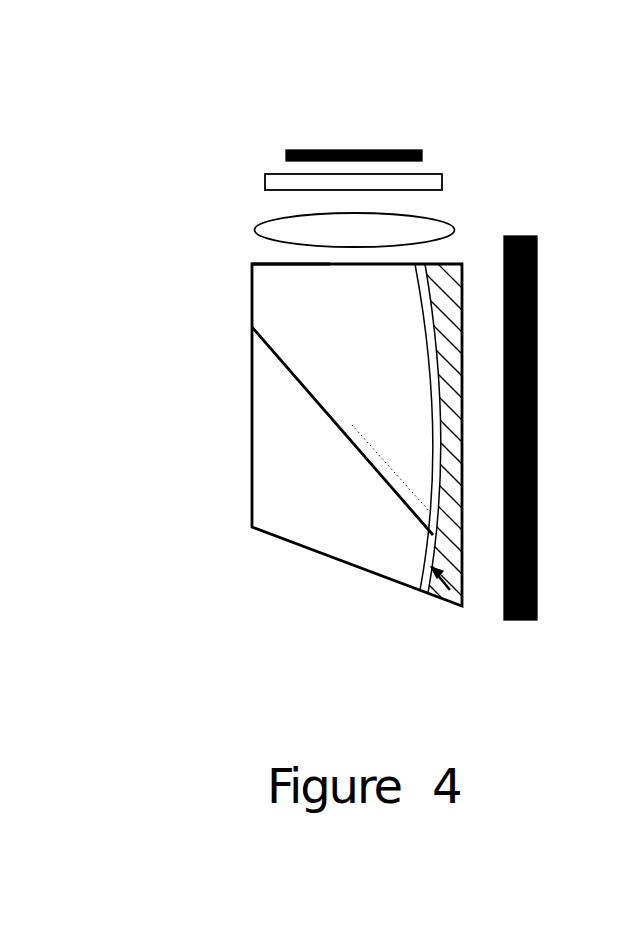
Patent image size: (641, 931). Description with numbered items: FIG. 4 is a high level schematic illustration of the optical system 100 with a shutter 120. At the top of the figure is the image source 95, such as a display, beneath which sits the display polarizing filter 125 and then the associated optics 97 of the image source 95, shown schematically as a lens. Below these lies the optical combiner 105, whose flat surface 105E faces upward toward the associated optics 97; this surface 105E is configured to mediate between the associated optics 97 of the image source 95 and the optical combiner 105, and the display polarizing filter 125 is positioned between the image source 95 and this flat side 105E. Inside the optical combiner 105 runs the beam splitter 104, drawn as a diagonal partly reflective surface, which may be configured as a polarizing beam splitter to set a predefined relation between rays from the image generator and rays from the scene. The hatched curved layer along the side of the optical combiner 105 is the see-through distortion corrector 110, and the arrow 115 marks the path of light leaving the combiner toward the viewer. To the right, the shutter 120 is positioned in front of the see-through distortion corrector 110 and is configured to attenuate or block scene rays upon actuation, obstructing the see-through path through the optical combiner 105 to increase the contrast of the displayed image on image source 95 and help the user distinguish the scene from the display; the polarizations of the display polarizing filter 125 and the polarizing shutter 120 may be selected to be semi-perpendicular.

The optical system 100 is at (146, 33).
The image source 95 is at (313, 150).
The display polarizing filter 125 is at (277, 174).
The associated optics 97 is at (273, 220).
The optical combiner 105 is at (277, 538).
The surface 105E is at (300, 259).
The beam splitter 104 is at (353, 447).
The see-through distortion corrector 110 is at (452, 547).
The exit ray direction 115 is at (453, 605).
The shutter 120 is at (537, 411).